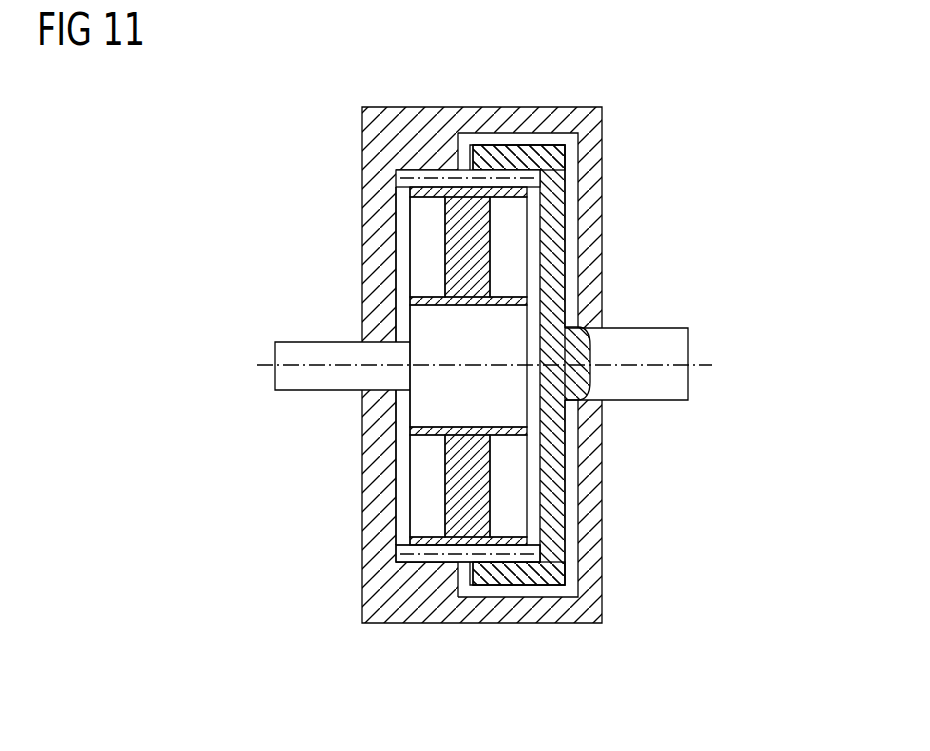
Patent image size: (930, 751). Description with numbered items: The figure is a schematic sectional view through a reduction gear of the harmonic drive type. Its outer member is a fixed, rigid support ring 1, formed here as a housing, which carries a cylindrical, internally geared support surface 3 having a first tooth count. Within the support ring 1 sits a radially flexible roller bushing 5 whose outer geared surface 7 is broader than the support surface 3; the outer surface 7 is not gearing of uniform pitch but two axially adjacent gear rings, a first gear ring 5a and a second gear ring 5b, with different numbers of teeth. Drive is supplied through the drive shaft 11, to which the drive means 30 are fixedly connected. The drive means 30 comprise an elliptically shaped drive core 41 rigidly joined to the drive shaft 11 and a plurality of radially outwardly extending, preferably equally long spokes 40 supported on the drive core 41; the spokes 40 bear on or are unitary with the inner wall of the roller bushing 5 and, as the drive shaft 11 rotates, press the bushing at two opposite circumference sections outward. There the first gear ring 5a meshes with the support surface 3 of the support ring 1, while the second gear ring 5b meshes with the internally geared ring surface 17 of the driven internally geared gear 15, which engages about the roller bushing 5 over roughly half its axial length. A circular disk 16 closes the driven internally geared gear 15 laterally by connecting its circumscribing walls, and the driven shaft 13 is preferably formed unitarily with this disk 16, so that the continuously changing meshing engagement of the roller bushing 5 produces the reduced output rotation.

The support ring 1 is at (383, 123).
The support surface 3 is at (603, 182).
The roller bushing 5 is at (467, 177).
The first gear ring 5a is at (405, 546).
The second gear ring 5b is at (518, 563).
The outer geared surface 7 is at (465, 562).
The drive shaft 11 is at (285, 357).
The driven shaft 13 is at (667, 343).
The driven internally geared gear 15 is at (537, 157).
The disk 16 is at (550, 498).
The ring surface 17 is at (545, 180).
The drive means 30 is at (493, 410).
The spokes 40 is at (455, 267).
The drive core 41 is at (433, 415).